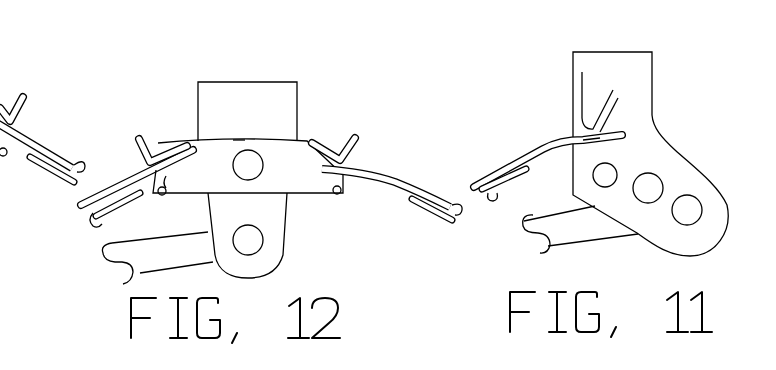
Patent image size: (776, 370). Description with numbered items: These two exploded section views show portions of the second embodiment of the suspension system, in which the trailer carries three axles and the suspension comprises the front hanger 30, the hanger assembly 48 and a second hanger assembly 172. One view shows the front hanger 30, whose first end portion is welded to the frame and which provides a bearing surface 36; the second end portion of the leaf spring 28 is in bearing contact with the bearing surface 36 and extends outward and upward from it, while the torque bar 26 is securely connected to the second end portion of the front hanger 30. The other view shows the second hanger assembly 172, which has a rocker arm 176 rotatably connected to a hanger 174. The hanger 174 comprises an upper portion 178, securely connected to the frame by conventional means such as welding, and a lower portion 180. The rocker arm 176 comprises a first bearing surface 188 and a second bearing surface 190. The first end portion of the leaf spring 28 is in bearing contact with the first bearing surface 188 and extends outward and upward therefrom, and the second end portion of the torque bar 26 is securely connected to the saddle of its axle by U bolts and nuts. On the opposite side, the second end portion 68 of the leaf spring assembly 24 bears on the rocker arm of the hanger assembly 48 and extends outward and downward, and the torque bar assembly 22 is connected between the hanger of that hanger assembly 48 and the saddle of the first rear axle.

In FIG. 11, the torque bar assembly 22 is at (524, 228).
In FIG. 12, the leaf spring assembly 24 is at (420, 182).
In FIG. 11, the leaf spring assembly 24 is at (490, 167).
In FIG. 12, the torque bar 26 is at (110, 264).
In FIG. 12, the leaf spring 28 is at (128, 182).
In FIG. 11, the front hanger 30 is at (667, 130).
In FIG. 11, the bearing surface 36 is at (613, 107).
In FIG. 12, the hanger assembly 48 is at (0, 43).
In FIG. 11, the second end portion 68 is at (577, 146).
In FIG. 12, the second hanger assembly 172 is at (268, 150).
In FIG. 12, the hanger 174 is at (287, 210).
In FIG. 12, the rocker arm 176 is at (233, 140).
In FIG. 12, the upper portion 178 is at (256, 88).
In FIG. 12, the lower portion 180 is at (283, 247).
In FIG. 12, the first bearing surface 188 is at (153, 147).
In FIG. 12, the second bearing surface 190 is at (343, 176).